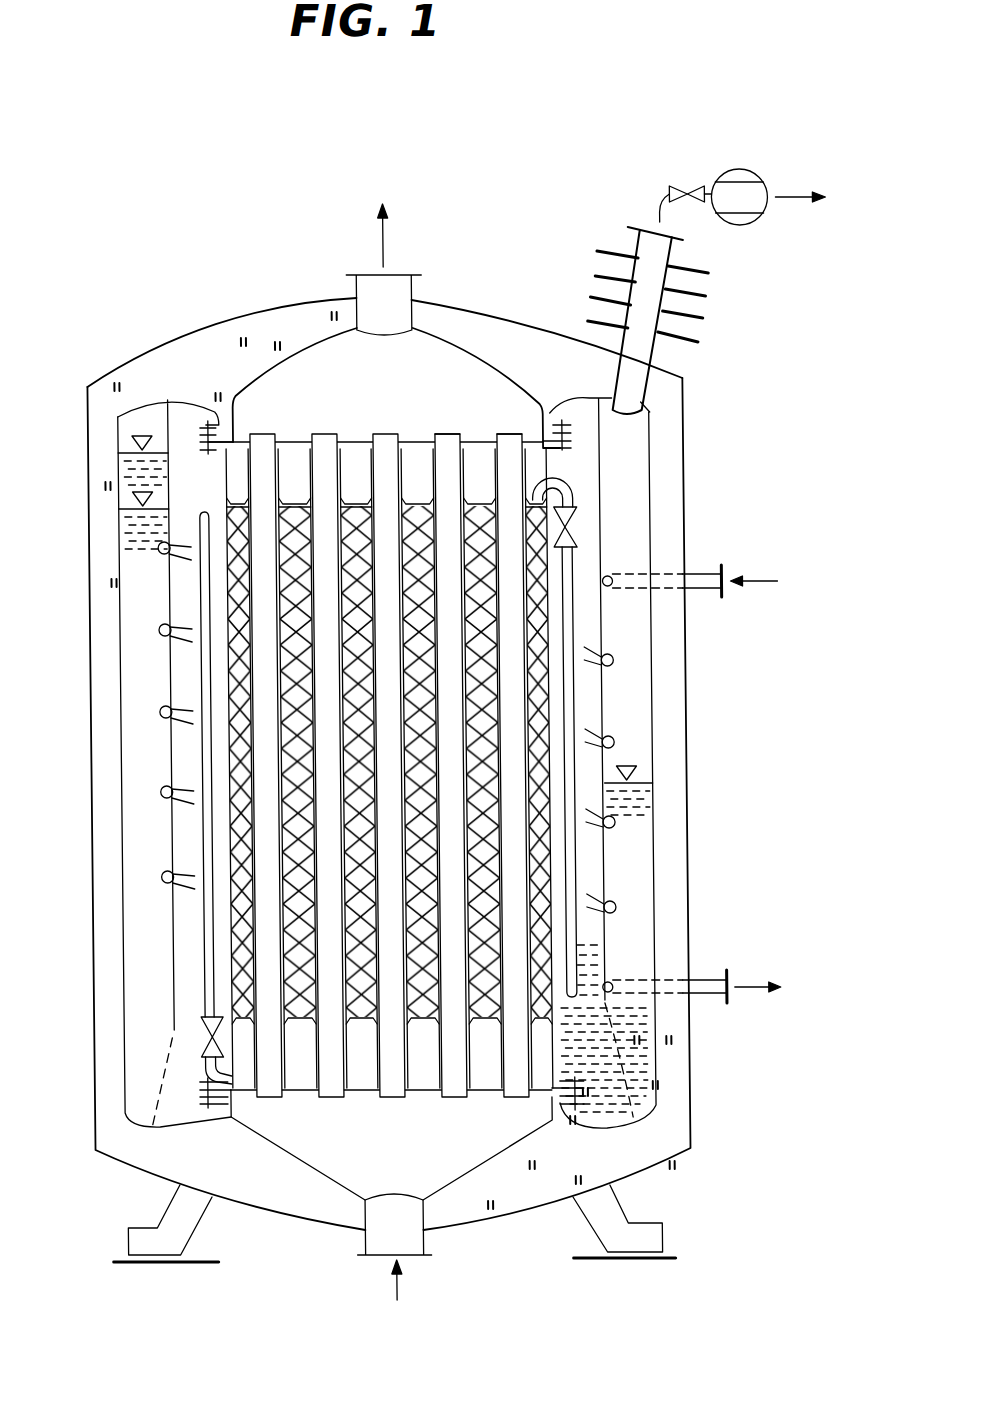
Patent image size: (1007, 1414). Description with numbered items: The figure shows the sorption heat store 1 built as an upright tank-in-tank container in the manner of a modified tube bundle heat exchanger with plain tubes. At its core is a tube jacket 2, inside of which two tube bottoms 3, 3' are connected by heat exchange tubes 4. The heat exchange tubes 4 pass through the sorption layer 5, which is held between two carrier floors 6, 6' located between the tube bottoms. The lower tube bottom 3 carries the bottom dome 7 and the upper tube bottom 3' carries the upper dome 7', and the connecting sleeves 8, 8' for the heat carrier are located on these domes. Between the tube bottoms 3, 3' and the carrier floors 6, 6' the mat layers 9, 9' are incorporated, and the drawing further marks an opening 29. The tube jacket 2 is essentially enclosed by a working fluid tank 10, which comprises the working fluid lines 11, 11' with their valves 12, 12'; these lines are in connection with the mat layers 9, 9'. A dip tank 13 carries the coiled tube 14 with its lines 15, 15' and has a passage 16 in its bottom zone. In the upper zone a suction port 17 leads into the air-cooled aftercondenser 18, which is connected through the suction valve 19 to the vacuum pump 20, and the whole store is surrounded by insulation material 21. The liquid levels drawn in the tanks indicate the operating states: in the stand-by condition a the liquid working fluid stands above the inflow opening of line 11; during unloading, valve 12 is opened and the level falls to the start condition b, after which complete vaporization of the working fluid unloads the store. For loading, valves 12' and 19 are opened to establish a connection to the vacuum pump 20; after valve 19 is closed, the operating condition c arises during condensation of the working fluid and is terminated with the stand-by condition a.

The sorption heat store 1 is at (435, 222).
The tube jacket 2 is at (547, 1005).
The tube bottom 3 is at (455, 1127).
The tube bottom 3' is at (385, 402).
The heat exchange tube 4 is at (450, 1087).
The sorption layer 5 is at (417, 1023).
The carrier floor 6 is at (305, 822).
The carrier floor 6' is at (324, 439).
The bottom dome 7 is at (374, 1233).
The upper dome 7' is at (395, 352).
The connecting sleeve 8 is at (382, 1286).
The connecting sleeve 8' is at (377, 265).
The mat layer 9 is at (328, 790).
The mat layer 9' is at (478, 420).
The working fluid tank 10 is at (180, 1113).
The working fluid line 11 is at (127, 764).
The working fluid line 11' is at (654, 772).
The valve 12 is at (136, 1046).
The valve 12' is at (634, 512).
The dip tank 13 is at (166, 906).
The coiled tube 14 is at (157, 795).
The feed line 15 is at (690, 610).
The feed line 15' is at (692, 1014).
The passage 16 is at (150, 1103).
The suction port 17 is at (635, 363).
The aftercondenser 18 is at (700, 294).
The suction valve 19 is at (695, 203).
The vacuum pump 20 is at (738, 192).
The insulation material 21 is at (104, 717).
The opening 29 is at (538, 498).
The stand-by condition a is at (130, 443).
The start condition b is at (130, 500).
The operating condition c is at (628, 768).